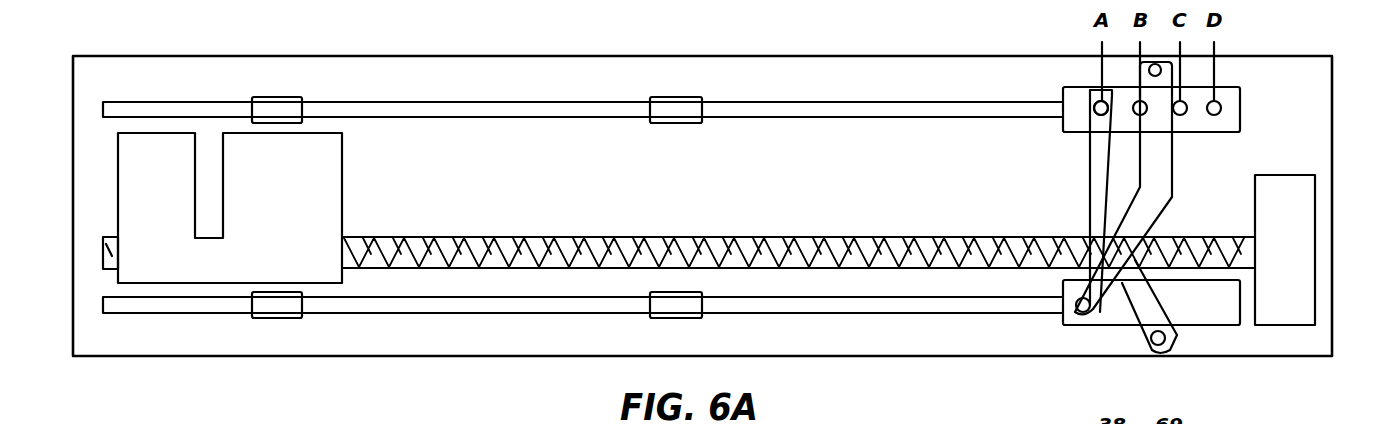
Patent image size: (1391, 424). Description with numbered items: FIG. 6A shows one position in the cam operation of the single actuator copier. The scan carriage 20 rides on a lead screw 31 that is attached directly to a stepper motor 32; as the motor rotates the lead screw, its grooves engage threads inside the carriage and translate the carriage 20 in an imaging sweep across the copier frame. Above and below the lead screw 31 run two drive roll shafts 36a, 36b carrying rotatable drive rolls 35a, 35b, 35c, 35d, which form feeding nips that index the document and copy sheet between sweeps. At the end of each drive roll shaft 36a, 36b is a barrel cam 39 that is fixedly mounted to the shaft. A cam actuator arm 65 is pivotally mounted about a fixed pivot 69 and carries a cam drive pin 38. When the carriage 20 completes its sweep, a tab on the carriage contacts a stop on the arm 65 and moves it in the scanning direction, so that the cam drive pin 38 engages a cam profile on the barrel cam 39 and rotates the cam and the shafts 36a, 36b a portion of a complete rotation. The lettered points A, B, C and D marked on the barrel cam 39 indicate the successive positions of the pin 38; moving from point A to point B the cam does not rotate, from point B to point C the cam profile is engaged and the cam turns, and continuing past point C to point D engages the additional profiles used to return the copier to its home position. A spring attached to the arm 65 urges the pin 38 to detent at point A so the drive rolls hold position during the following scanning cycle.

The scan carriage 20 is at (342, 180).
The lead screw 31 is at (590, 237).
The stepper motor 32 is at (1318, 247).
The drive roll 35a is at (673, 303).
The drive roll 35b is at (277, 305).
The drive roll 35c is at (673, 110).
The drive roll 35d is at (277, 110).
The drive roll shaft 36a is at (855, 103).
The drive roll shaft 36b is at (877, 312).
The cam drive pin 38 is at (1093, 108).
The barrel cam 39 is at (1230, 108).
The cam actuator arm 65 is at (1093, 173).
The fixed pivot 69 is at (1150, 347).